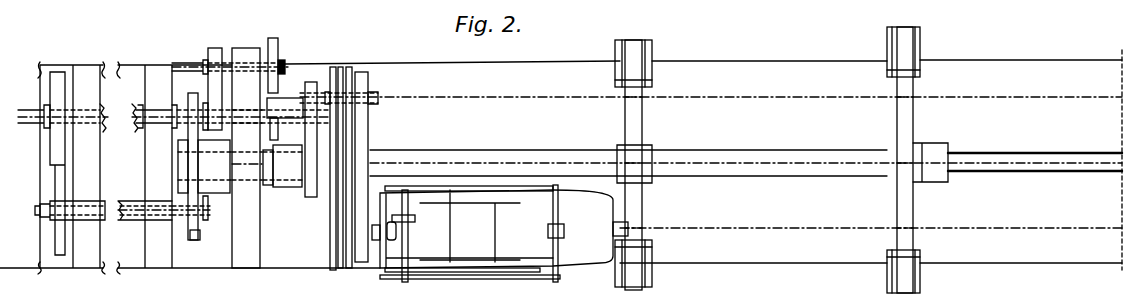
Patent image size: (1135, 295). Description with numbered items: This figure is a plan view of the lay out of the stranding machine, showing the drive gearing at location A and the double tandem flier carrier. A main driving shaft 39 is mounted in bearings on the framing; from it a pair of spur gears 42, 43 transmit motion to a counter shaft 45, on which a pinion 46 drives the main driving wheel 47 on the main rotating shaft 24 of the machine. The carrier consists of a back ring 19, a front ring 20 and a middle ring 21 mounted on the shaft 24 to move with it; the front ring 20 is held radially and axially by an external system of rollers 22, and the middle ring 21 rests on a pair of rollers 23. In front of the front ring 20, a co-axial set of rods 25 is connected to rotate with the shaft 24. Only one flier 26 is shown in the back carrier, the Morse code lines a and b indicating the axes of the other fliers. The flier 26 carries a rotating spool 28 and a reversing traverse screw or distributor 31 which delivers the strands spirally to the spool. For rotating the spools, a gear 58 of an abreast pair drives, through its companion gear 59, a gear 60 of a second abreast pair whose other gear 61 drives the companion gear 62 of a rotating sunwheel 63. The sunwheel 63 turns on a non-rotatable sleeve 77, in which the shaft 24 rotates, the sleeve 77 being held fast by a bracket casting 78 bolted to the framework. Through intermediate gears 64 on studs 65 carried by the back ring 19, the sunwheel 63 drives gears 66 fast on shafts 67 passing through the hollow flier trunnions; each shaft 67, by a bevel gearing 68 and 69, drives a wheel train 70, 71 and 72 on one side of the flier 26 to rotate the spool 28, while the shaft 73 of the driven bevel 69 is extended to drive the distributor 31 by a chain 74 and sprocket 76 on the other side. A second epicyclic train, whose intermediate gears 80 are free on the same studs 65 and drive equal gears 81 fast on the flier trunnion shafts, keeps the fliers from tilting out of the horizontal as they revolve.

The main driving shaft 39 is at (44, 108).
The spur gear 42 is at (55, 149).
The spur gear 43 is at (58, 188).
The counter shaft 45 is at (135, 215).
The pinion 46 is at (200, 236).
The main driving wheel 47 is at (186, 172).
The gear 58 is at (278, 50).
The gear 59 is at (208, 79).
The gear 60 is at (232, 142).
The gear 61 is at (330, 115).
The companion gear 62 is at (318, 182).
The sunwheel 63 is at (338, 222).
The intermediate gear 64 is at (346, 80).
The stud 65 is at (348, 135).
The gear 66 is at (362, 76).
The shaft 67 is at (338, 266).
The bevel gear 68 is at (397, 236).
The driven bevel 69 is at (416, 218).
The wheel train gear 70 is at (410, 188).
The wheel train gear 71 is at (440, 185).
The wheel train gear 72 is at (520, 180).
The shaft 73 is at (409, 250).
The chain 74 is at (430, 284).
The sprocket 76 is at (548, 284).
The sleeve 77 is at (385, 148).
The bracket casting 78 is at (286, 190).
The intermediate gear 80 is at (372, 184).
The gear 81 is at (368, 88).
The back ring 19 is at (368, 118).
The front ring 20 is at (914, 120).
The middle ring 21 is at (643, 133).
The roller 22 is at (918, 48).
The roller 23 is at (646, 57).
The main rotating shaft 24 is at (480, 180).
The rods 25 is at (1030, 170).
The flier 26 is at (566, 192).
The spool 28 is at (497, 232).
The reversing traverse screw 31 is at (559, 250).
The wheel trains location A is at (114, 160).
The flier axis line a is at (740, 97).
The flier axis line b is at (553, 97).